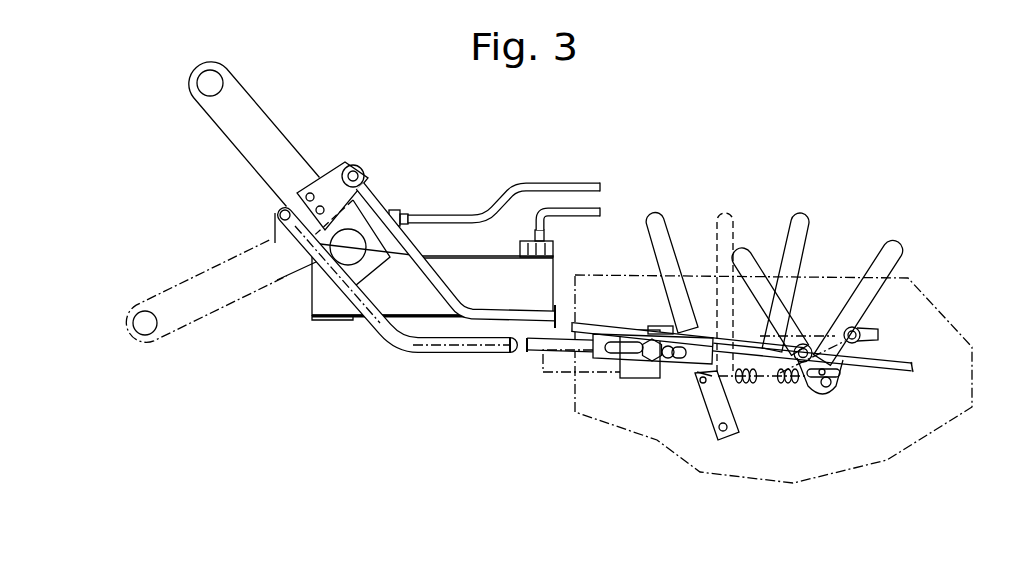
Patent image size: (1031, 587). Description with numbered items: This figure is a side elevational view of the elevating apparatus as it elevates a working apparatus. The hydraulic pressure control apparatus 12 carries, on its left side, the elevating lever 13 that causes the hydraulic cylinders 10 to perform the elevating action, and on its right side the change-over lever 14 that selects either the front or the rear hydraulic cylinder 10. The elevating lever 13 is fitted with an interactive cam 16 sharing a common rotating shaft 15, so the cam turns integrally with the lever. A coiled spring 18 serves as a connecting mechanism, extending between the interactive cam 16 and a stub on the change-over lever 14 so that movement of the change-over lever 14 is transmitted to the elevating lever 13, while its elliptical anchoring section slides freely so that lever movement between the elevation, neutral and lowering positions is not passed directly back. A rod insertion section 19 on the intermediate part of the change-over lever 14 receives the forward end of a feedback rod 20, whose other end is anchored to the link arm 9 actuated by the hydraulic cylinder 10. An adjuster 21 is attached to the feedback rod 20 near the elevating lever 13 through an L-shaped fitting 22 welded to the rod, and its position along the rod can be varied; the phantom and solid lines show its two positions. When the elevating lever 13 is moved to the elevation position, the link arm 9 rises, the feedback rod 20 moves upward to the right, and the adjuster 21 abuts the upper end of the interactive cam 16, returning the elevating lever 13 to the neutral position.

The link arm 9 is at (270, 128).
The hydraulic cylinder 10 is at (392, 303).
The hydraulic pressure control apparatus 12 is at (880, 433).
The elevating lever 13 is at (657, 226).
The change-over lever 14 is at (781, 312).
The rotating shaft 15 is at (725, 433).
The interactive cam 16 is at (710, 422).
The coiled spring 18 is at (752, 385).
The rod insertion section 19 is at (798, 390).
The feedback rod 20 is at (475, 315).
The adjuster 21 is at (617, 360).
The L-shaped fitting 22 is at (653, 327).